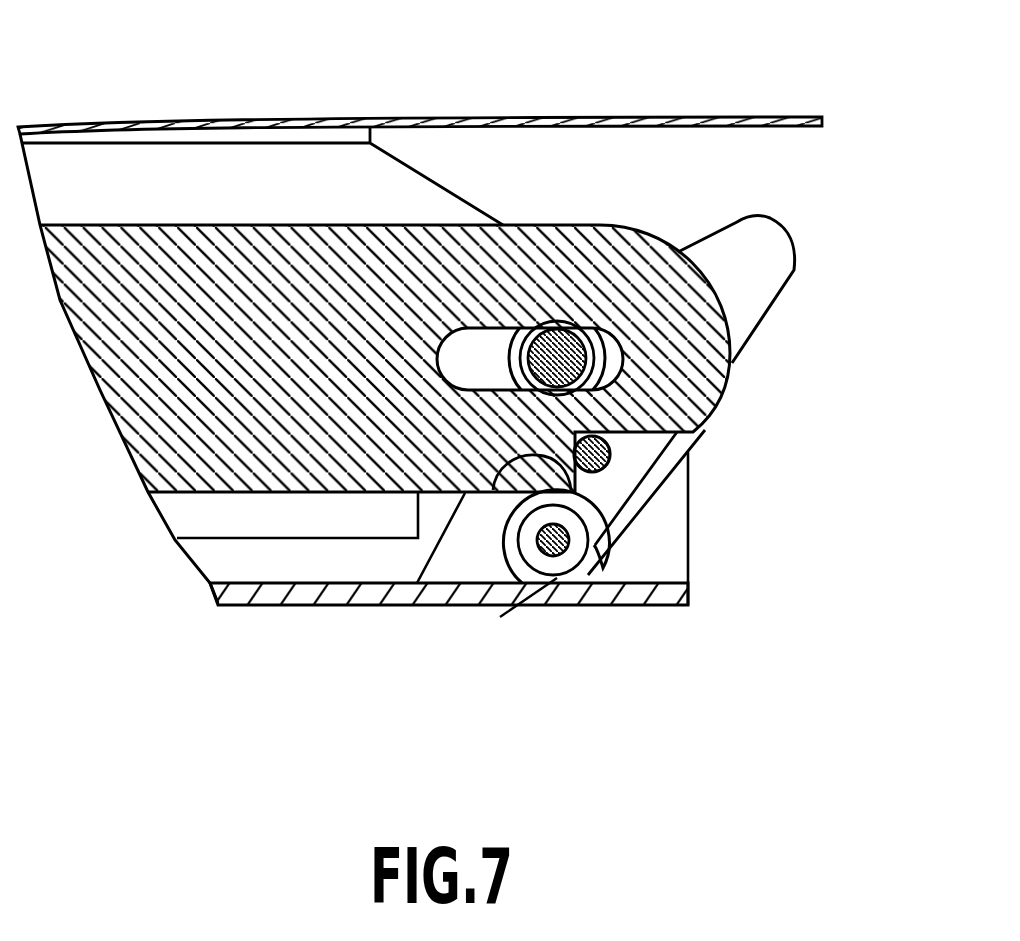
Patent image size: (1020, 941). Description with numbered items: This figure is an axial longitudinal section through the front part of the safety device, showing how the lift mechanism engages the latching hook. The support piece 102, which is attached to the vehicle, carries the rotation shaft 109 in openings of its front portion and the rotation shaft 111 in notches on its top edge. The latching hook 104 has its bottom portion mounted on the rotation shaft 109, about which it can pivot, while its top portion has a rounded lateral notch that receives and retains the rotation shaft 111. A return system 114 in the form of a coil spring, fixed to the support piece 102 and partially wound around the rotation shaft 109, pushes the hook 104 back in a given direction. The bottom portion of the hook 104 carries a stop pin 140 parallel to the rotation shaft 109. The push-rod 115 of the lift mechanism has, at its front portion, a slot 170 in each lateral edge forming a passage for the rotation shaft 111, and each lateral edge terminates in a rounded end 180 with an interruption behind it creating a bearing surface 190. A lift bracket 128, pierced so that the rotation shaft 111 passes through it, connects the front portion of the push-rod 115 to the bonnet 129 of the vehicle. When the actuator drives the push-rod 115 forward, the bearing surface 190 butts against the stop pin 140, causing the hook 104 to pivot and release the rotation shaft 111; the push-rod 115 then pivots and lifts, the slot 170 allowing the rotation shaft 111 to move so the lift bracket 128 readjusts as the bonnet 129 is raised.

The support piece 102 is at (310, 595).
The latching hook 104 is at (742, 273).
The rotation shaft 109 is at (560, 547).
The rotation shaft 111 is at (565, 345).
The return system 114 is at (665, 469).
The push-rod 115 is at (570, 253).
The lift bracket 128 is at (267, 165).
The bonnet 129 is at (92, 126).
The stop pin 140 is at (612, 458).
The slot 170 is at (463, 358).
The rounded end 180 is at (727, 327).
The bearing surface 190 is at (492, 490).